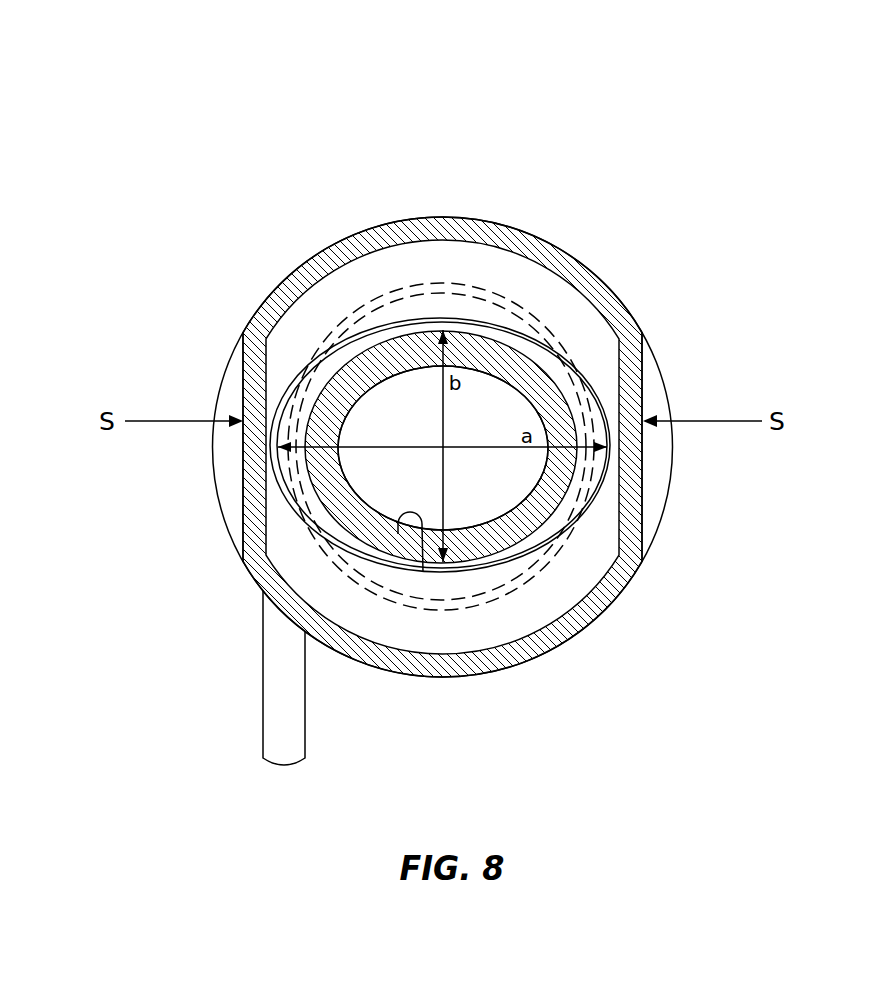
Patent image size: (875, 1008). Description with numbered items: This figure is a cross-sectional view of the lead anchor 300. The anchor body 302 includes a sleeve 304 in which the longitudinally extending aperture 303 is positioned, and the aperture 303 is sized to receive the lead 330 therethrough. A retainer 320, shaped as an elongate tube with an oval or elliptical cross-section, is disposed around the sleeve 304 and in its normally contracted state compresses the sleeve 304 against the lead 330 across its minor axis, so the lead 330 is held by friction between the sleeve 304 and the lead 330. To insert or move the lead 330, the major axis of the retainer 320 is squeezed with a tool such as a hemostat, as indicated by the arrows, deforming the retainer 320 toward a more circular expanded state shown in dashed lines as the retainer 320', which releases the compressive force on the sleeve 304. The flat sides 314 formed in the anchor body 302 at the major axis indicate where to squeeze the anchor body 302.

The lead anchor 300 is at (664, 188).
The anchor body 302 is at (222, 298).
The longitudinally extending aperture 303 is at (423, 572).
The sleeve 304 is at (467, 343).
The flat sides 314 is at (243, 500).
The retainer 320 is at (461, 505).
The retainer in expanded state 320' is at (441, 387).
The lead 330 is at (440, 497).